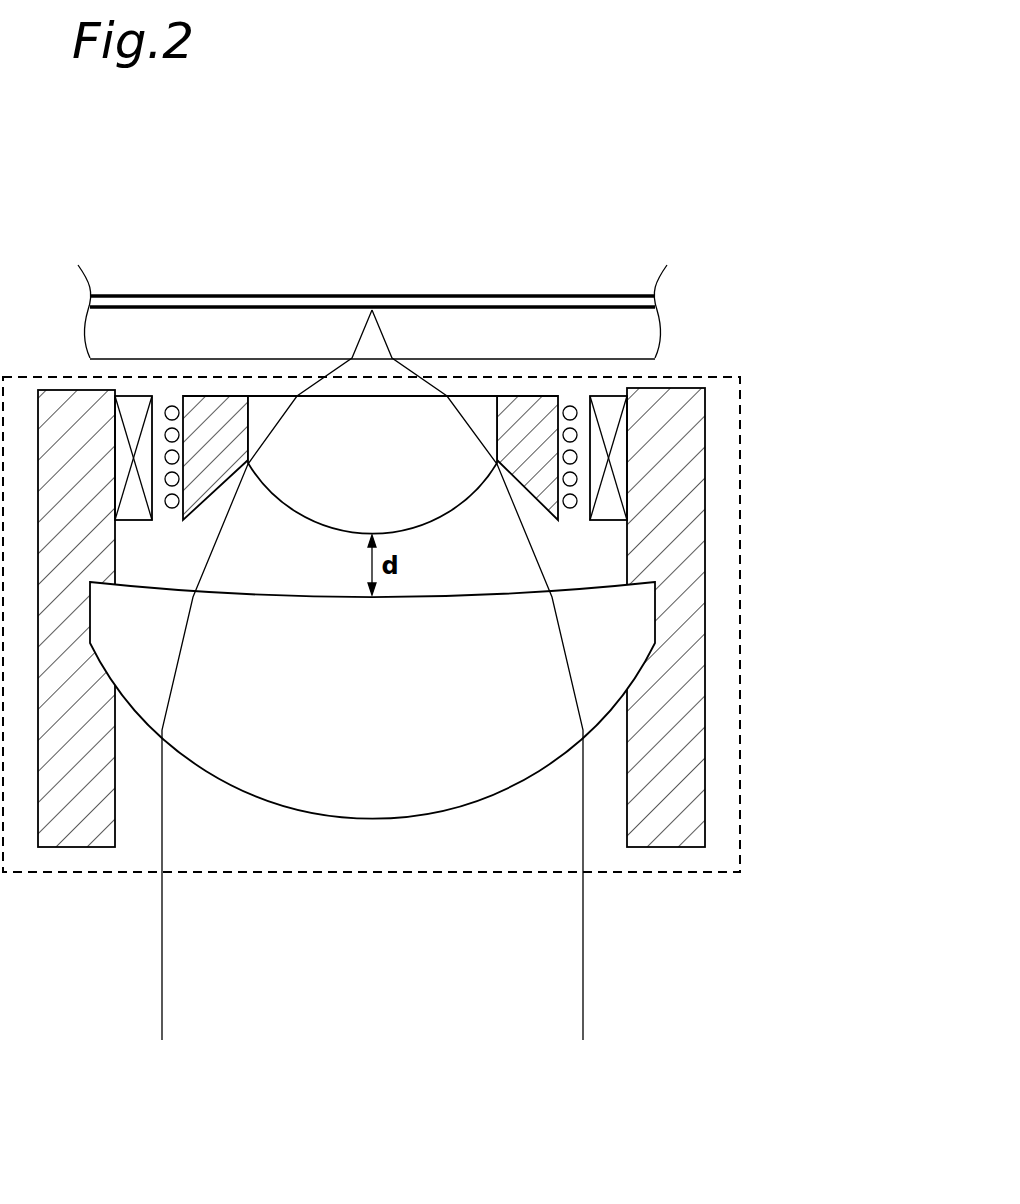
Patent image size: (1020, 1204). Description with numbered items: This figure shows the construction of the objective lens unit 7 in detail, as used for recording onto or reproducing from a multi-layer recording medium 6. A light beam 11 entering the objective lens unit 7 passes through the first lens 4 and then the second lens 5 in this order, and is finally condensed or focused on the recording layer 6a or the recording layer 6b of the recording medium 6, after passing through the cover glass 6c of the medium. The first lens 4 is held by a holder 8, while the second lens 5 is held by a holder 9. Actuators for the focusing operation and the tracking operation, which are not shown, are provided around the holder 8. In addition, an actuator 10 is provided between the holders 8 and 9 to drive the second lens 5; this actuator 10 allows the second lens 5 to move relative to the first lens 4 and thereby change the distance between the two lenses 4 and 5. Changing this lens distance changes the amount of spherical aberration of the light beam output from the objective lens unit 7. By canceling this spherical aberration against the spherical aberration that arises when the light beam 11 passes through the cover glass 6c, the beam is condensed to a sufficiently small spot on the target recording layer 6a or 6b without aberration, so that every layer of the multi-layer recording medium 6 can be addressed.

The first lens 4 is at (642, 610).
The second lens 5 is at (472, 405).
The recording medium 6 is at (420, 258).
The recording layer 6a is at (660, 307).
The recording layer 6b is at (667, 295).
The cover glass 6c is at (650, 332).
The objective lens unit 7 is at (740, 762).
The holder 8 is at (705, 508).
The holder 9 is at (528, 395).
The actuator 10 is at (162, 398).
The light beam 11 is at (583, 976).